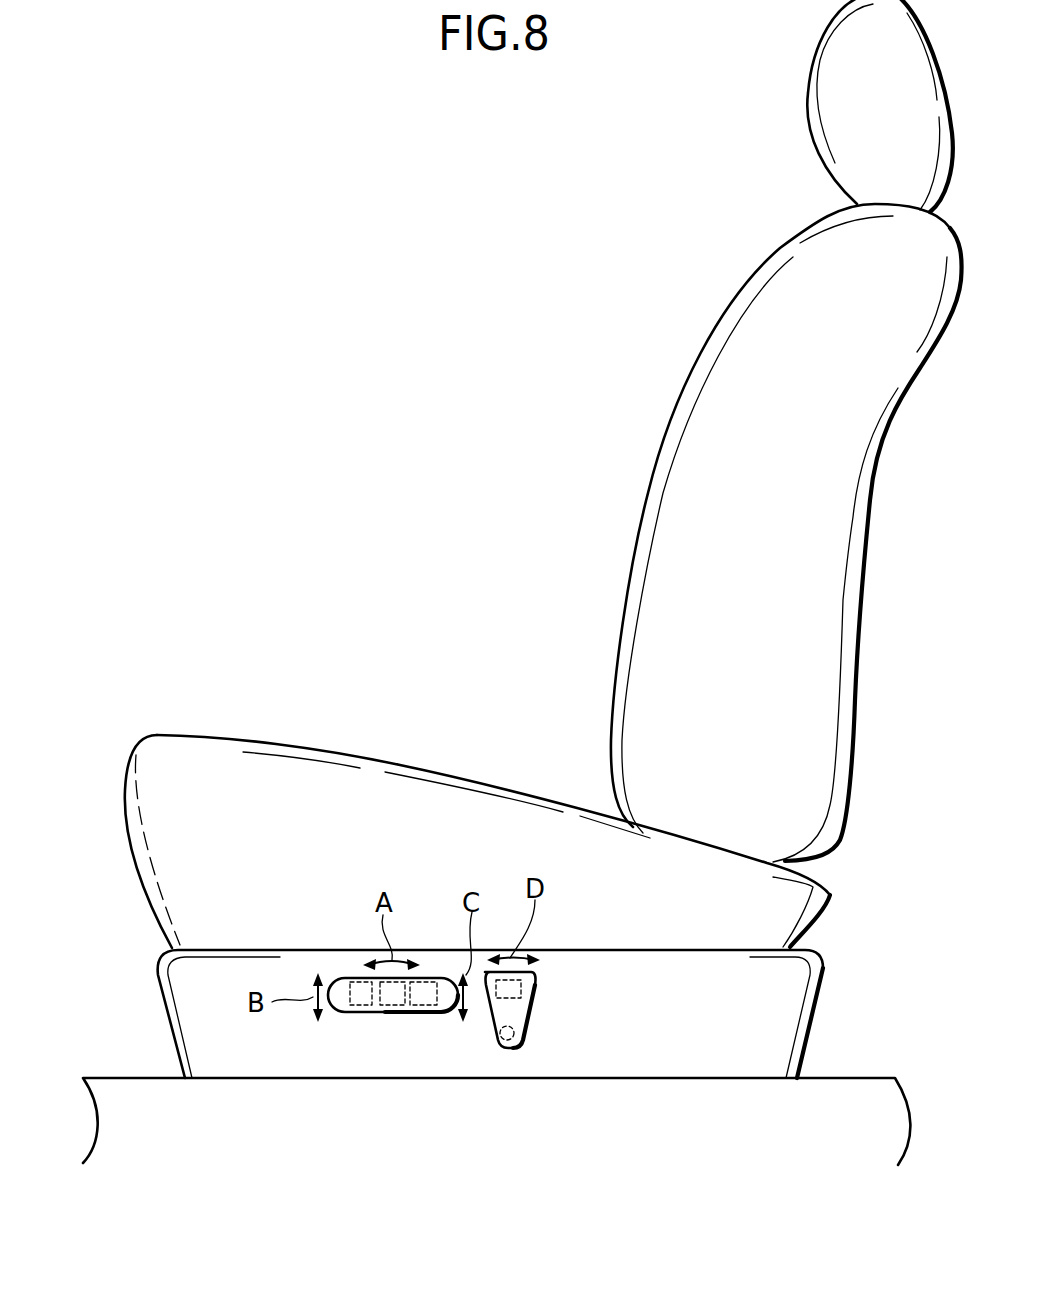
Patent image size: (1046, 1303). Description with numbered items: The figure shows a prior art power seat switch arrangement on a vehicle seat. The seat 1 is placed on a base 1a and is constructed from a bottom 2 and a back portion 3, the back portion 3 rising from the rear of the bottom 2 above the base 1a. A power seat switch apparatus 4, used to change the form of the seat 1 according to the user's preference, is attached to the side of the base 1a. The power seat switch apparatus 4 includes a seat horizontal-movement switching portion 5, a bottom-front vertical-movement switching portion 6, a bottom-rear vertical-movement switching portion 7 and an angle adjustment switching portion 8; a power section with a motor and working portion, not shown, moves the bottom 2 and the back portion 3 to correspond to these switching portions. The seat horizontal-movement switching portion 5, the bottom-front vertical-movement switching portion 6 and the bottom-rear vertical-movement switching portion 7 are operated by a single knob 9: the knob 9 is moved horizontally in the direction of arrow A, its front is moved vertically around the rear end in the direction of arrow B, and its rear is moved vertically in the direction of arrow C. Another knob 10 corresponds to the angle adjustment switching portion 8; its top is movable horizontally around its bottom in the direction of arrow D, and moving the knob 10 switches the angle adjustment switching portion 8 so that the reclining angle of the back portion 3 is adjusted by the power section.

The seat 1 is at (672, 363).
The base 1a is at (817, 1002).
The bottom 2 is at (348, 753).
The back portion 3 is at (650, 495).
The power seat switch apparatus 4 is at (442, 1028).
The seat horizontal-movement switching portion 5 is at (385, 1012).
The bottom-front vertical-movement switching portion 6 is at (350, 1017).
The bottom-rear vertical-movement switching portion 7 is at (417, 1012).
The angle adjustment switching portion 8 is at (533, 982).
The knob 9 is at (389, 1068).
The knob 10 is at (545, 1045).